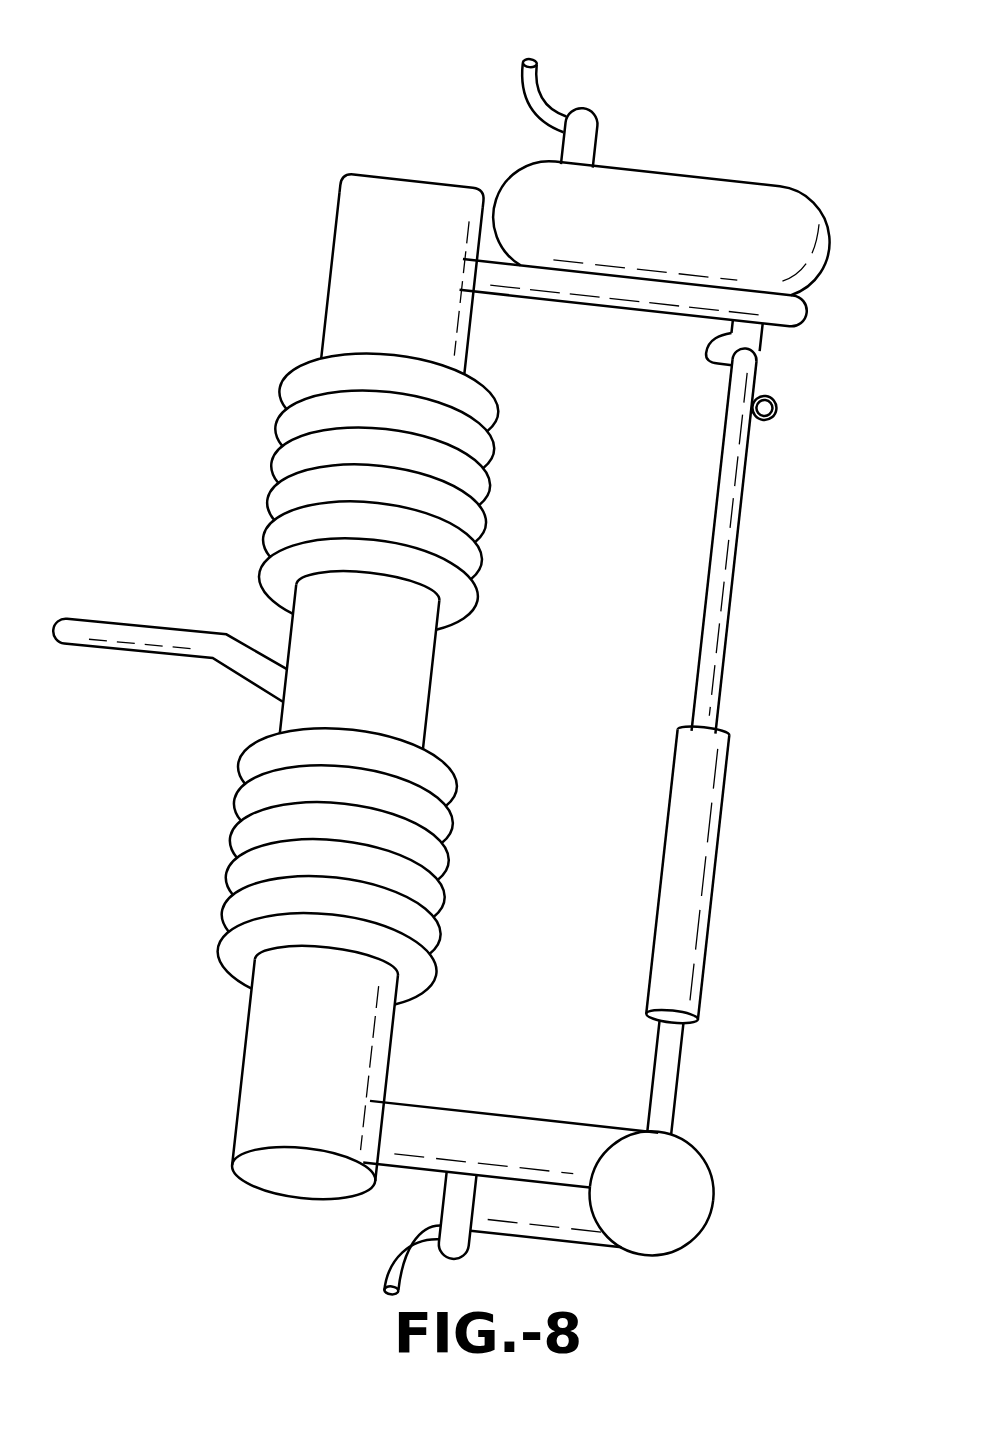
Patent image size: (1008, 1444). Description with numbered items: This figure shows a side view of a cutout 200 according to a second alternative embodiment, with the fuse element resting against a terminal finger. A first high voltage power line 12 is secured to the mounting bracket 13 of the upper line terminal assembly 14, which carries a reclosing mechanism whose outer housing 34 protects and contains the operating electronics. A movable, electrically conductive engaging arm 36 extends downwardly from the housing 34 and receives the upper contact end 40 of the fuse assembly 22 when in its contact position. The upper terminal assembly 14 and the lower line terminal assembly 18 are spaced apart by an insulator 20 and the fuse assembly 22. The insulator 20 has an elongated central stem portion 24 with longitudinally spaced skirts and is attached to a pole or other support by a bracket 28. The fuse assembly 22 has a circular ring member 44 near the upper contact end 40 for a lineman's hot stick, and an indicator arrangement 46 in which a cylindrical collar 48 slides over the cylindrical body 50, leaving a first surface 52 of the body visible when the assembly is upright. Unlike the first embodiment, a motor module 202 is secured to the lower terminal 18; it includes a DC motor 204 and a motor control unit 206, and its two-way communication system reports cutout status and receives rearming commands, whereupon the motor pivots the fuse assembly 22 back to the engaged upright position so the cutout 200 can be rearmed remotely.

The cutout 200 is at (170, 128).
The first high voltage power line 12 is at (526, 76).
The mounting bracket 13 is at (600, 132).
The outer housing 34 is at (626, 237).
The upper line terminal assembly 14 is at (598, 312).
The engaging arm 36 is at (748, 338).
The upper contact end 40 is at (742, 352).
The circular ring member 44 is at (778, 410).
The cylindrical body 50 is at (737, 514).
The first surface 52 is at (713, 582).
The fuse assembly 22 is at (733, 682).
The indicator arrangement 46 is at (652, 850).
The cylindrical collar 48 is at (692, 942).
The central stem portion 24 is at (349, 660).
The insulator 20 is at (437, 709).
The bracket 28 is at (137, 631).
The lower line terminal assembly 18 is at (504, 1100).
The DC motor 204 is at (698, 1175).
The motor module 202 is at (668, 1259).
The motor control unit 206 is at (538, 1237).